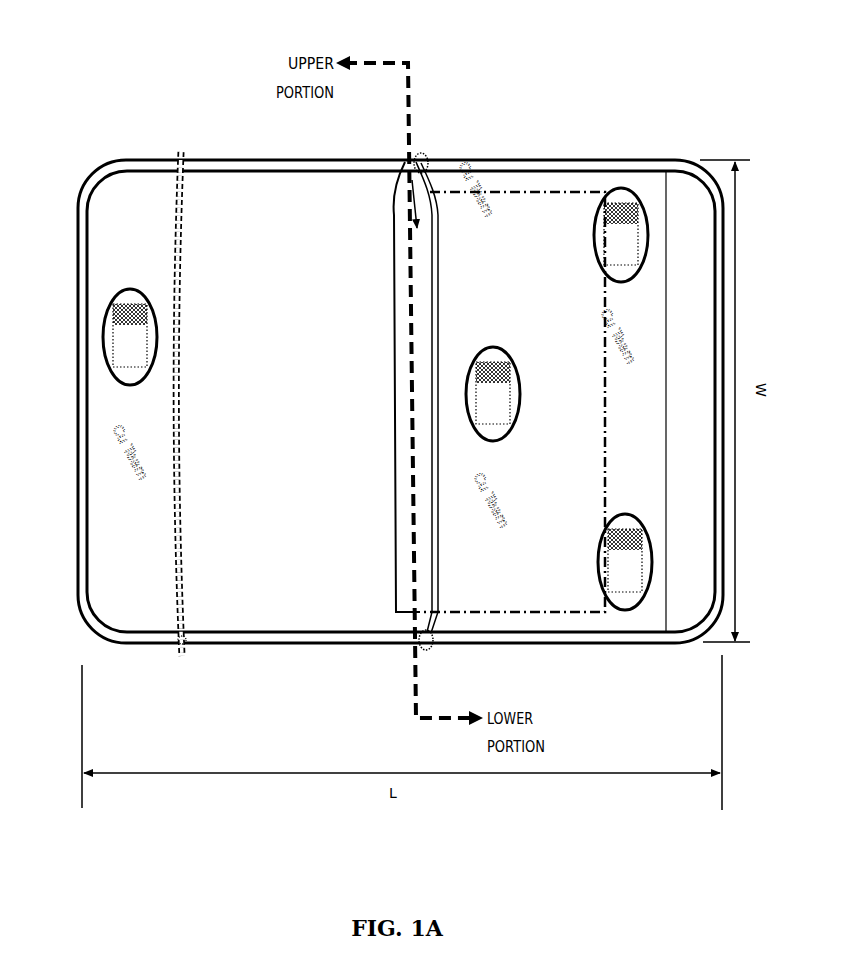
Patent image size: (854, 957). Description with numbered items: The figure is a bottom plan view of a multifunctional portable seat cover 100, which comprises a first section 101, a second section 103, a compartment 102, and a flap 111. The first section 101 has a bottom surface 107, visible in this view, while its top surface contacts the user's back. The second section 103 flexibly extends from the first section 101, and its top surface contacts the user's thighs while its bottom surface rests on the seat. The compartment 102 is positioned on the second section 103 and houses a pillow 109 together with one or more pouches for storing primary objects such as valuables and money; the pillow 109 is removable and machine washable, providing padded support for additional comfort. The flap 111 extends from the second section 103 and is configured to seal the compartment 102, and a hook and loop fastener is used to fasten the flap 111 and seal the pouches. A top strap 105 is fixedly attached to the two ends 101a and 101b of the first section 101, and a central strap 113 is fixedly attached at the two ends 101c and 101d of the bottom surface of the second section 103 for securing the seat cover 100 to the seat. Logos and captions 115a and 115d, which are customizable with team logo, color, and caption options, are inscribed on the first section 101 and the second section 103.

The multifunctional portable seat cover 100 is at (131, 82).
The first section 101 is at (277, 636).
The first end of the first section 101a is at (182, 153).
The second end of the first section 101b is at (189, 641).
The first end of the second section bottom surface 101c is at (428, 157).
The second end of the second section bottom surface 101d is at (440, 648).
The compartment 102 is at (406, 163).
The second section 103 is at (537, 190).
The top strap 105 is at (183, 225).
The bottom surface 107 is at (131, 612).
The pillow 109 is at (396, 432).
The flap 111 is at (683, 192).
The central strap 113 is at (438, 281).
The logo and caption 115a is at (505, 520).
The logo and caption 115d is at (148, 454).